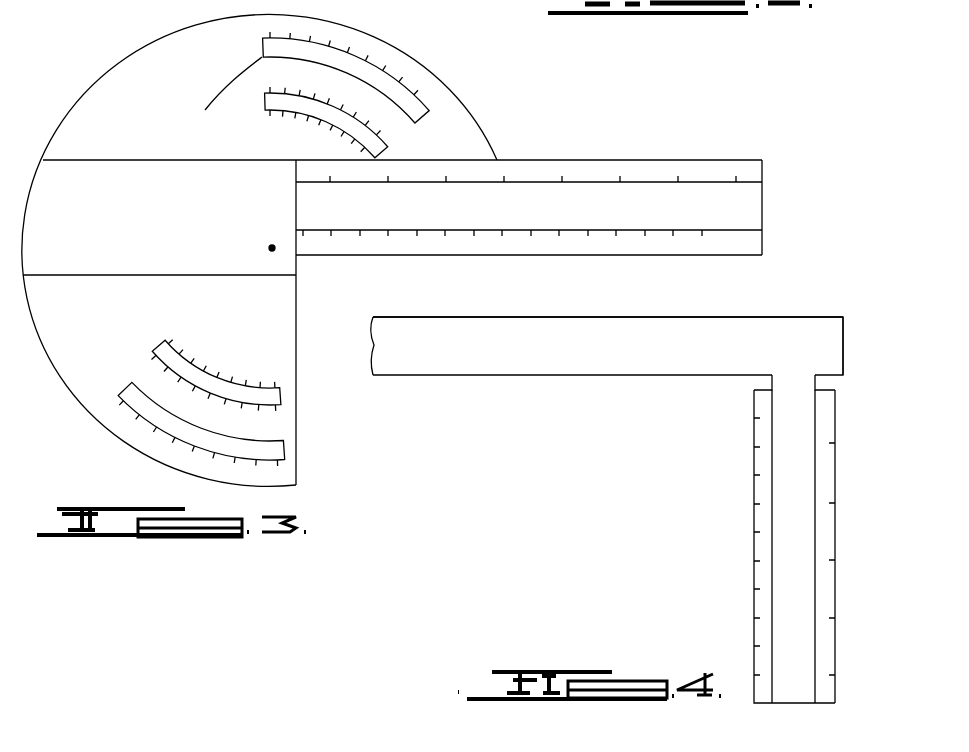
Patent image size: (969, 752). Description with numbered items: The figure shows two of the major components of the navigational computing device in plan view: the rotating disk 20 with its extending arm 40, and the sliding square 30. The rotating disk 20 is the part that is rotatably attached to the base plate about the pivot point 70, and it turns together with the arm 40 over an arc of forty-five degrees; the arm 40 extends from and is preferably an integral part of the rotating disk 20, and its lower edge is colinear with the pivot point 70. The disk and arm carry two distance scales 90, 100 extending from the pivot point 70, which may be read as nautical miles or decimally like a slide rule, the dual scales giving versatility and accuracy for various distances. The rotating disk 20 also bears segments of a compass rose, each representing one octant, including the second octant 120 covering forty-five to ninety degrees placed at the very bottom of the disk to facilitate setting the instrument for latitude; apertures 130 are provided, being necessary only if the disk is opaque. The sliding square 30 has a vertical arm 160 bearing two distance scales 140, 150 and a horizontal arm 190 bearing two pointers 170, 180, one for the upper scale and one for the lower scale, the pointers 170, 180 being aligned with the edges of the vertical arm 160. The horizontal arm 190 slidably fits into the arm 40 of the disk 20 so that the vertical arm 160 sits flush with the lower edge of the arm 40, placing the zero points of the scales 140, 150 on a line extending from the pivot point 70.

In FIG. 3, the rotating disk 20 is at (132, 107).
In FIG. 4, the sliding square 30 is at (446, 359).
In FIG. 3, the arm 40 is at (745, 200).
In FIG. 3, the pivot point 70 is at (269, 248).
In FIG. 3, the distance scale 90 is at (705, 234).
In FIG. 3, the distance scale 100 is at (737, 181).
In FIG. 3, the second octant 120 is at (118, 403).
In FIG. 3, the apertures 130 is at (263, 107).
In FIG. 4, the distance scale 140 is at (754, 668).
In FIG. 4, the distance scale 150 is at (831, 677).
In FIG. 4, the vertical arm 160 is at (794, 693).
In FIG. 3, the pointer 170 is at (263, 40).
In FIG. 4, the pointer 170 is at (758, 362).
In FIG. 4, the pointer 180 is at (830, 326).
In FIG. 4, the horizontal arm 190 is at (803, 360).